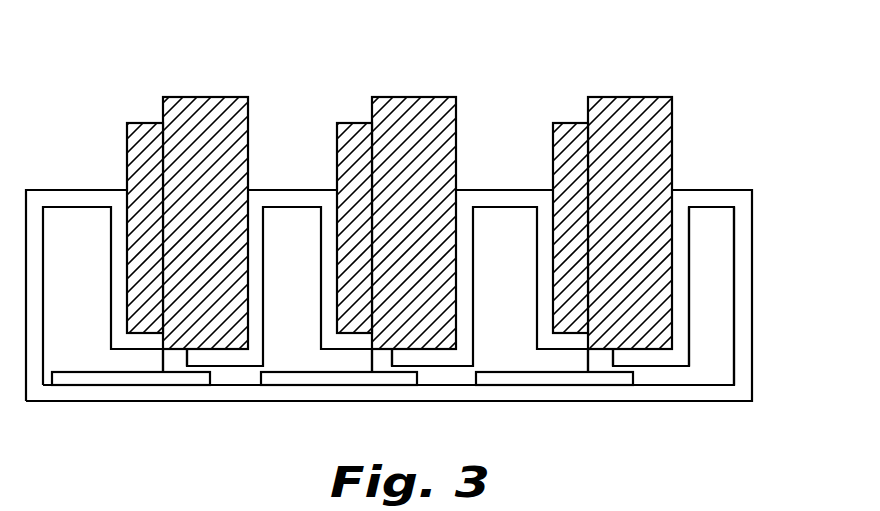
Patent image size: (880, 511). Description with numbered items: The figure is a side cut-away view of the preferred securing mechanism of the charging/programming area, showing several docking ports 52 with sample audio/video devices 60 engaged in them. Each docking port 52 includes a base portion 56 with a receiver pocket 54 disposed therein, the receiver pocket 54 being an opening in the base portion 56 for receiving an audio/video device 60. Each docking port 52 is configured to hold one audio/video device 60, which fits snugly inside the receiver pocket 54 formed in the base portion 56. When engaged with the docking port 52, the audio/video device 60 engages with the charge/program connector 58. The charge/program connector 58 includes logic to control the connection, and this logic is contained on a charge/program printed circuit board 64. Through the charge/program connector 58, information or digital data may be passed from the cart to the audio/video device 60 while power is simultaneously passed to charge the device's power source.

The docking port 52 is at (373, 54).
The receiver pocket 54 is at (680, 283).
The base portion 56 is at (728, 250).
The charge/program connector 58 is at (373, 366).
The audio/video device 60 is at (140, 125).
The charge/program printed circuit board 64 is at (389, 382).